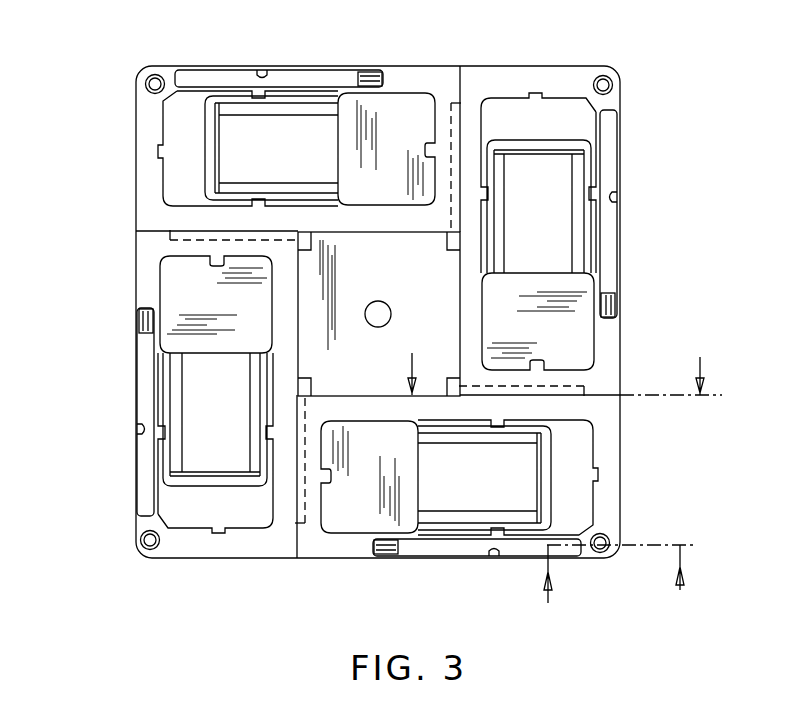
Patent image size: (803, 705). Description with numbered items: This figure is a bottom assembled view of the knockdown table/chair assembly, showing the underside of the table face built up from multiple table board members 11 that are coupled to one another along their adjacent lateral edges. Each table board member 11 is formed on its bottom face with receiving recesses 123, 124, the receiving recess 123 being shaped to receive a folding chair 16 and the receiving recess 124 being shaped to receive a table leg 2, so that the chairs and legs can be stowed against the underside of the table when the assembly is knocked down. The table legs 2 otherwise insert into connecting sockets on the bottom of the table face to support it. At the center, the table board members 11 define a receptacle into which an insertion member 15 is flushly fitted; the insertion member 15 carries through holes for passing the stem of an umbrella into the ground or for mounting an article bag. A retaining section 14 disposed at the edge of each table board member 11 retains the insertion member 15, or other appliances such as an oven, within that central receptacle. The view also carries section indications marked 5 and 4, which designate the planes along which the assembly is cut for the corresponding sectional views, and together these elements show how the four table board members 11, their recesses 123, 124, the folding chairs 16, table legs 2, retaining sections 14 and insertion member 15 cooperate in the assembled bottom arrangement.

The table board member 11 is at (158, 66).
The table leg 2 is at (220, 84).
The receiving recess 124 is at (259, 75).
The receiving recess 123 is at (163, 150).
The folding chair 16 is at (393, 115).
The retaining section 14 is at (307, 240).
The insertion member 15 is at (330, 318).
The section line 5- 5 is at (562, 360).
The section line 4- 4 is at (611, 584).